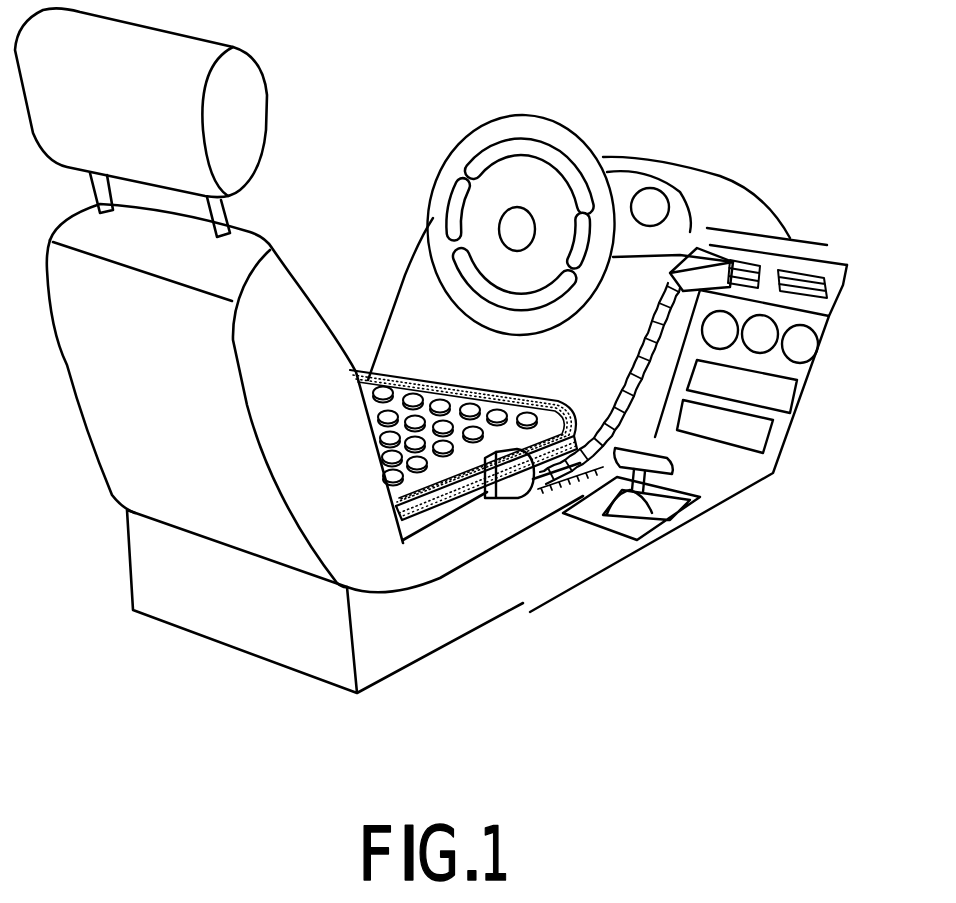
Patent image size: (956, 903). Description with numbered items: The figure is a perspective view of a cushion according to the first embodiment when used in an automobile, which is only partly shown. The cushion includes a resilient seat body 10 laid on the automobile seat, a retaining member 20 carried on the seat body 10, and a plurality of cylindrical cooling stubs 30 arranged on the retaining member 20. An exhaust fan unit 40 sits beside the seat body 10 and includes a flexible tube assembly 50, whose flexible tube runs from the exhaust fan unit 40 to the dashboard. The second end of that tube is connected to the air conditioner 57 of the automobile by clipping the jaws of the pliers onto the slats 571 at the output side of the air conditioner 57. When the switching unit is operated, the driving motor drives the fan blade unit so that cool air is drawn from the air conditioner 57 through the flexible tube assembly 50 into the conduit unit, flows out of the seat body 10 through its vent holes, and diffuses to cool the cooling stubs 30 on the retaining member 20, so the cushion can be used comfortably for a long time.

The resilient seat body 10 is at (441, 522).
The retaining member 20 is at (407, 378).
The cylindrical cooling stubs 30 is at (368, 384).
The exhaust fan unit 40 is at (534, 500).
The flexible tube assembly 50 is at (652, 397).
The air conditioner 57 is at (677, 428).
The slats 571 is at (747, 262).